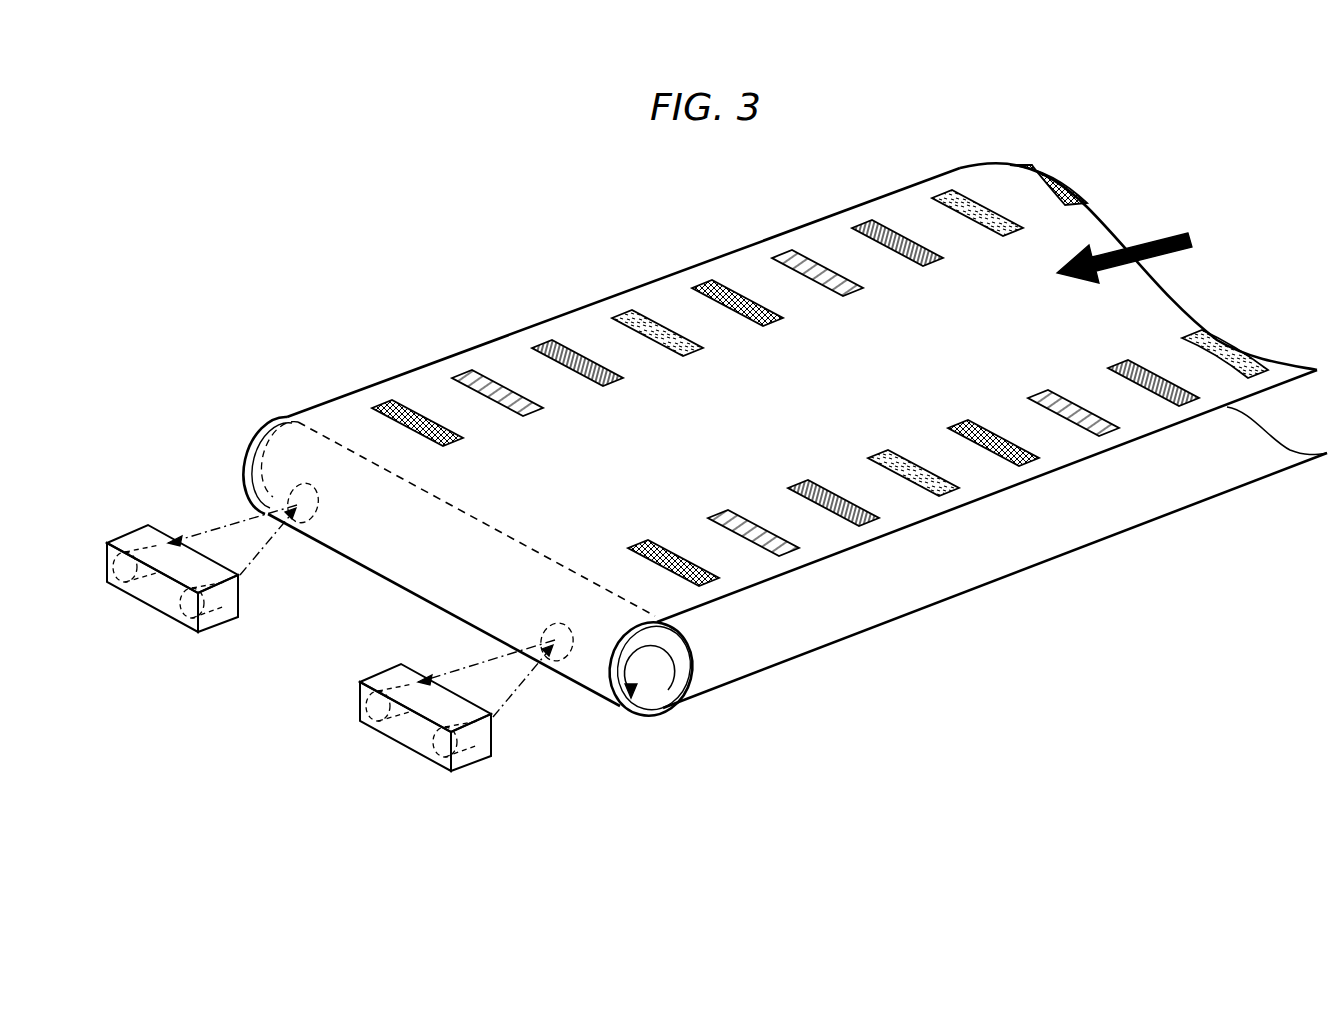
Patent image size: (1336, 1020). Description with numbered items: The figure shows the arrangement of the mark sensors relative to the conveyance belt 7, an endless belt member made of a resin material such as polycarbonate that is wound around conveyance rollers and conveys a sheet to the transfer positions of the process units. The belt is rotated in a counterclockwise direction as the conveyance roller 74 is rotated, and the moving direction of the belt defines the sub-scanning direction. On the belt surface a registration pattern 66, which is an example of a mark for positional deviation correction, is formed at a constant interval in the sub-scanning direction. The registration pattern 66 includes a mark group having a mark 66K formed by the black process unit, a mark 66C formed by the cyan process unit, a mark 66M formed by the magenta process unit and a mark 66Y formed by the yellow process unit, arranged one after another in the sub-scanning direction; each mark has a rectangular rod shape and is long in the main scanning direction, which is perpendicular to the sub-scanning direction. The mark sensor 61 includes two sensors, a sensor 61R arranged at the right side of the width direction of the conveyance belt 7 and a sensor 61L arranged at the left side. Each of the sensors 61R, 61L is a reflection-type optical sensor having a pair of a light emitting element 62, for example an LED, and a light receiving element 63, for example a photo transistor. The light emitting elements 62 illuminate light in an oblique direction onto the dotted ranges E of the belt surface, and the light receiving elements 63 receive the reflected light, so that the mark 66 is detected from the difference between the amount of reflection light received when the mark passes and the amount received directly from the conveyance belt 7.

The conveyance belt 7 is at (542, 330).
The conveyance roller 74 is at (647, 700).
The registration pattern 66 is at (810, 432).
The mark 66K is at (397, 403).
The mark 66C is at (795, 545).
The mark 66M is at (873, 512).
The mark 66Y is at (940, 408).
The mark sensor 61 is at (319, 656).
The sensor 61R is at (223, 630).
The sensor 61L is at (360, 698).
The light emitting element 62 is at (270, 750).
The light receiving element 63 is at (110, 586).
The dotted ranges E is at (243, 467).